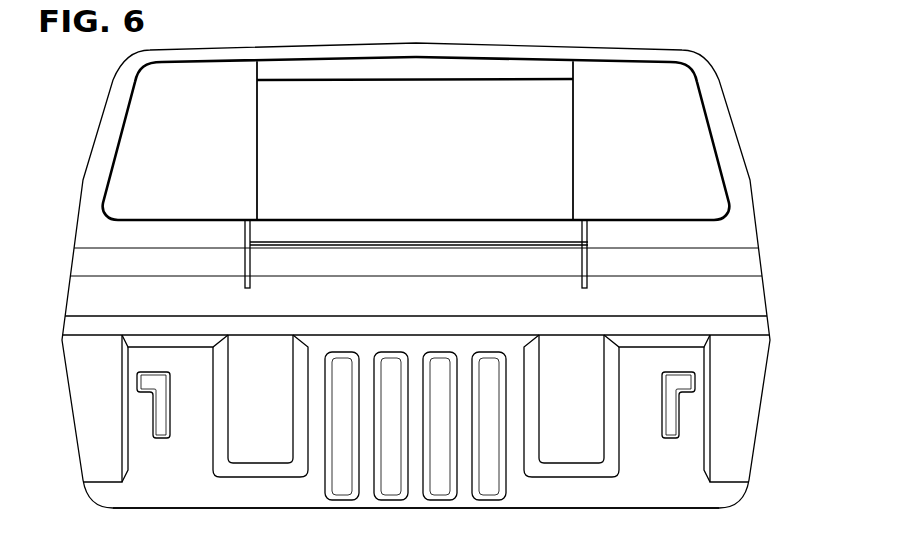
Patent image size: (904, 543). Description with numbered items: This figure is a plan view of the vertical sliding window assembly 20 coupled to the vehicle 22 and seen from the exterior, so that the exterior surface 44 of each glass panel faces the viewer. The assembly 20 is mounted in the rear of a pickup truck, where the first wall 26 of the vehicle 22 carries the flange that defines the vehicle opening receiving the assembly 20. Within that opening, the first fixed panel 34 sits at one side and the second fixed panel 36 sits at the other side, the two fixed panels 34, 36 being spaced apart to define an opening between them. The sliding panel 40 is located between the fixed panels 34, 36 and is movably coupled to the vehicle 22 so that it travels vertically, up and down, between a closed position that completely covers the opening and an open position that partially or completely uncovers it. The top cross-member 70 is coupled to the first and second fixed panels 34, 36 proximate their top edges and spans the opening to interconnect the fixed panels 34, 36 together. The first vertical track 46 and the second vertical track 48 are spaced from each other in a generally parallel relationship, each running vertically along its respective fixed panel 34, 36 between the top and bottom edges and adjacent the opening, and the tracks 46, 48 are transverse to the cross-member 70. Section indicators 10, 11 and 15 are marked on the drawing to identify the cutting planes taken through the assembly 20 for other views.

The section line 10- 10 is at (378, 90).
The section line 11- 11 is at (378, 280).
The section line 15- 15 is at (65, 188).
The vertical sliding window assembly 20 is at (706, 74).
The vehicle 22 is at (776, 320).
The first wall 26 is at (742, 295).
The first fixed panel 34 is at (133, 142).
The second fixed panel 36 is at (702, 152).
The sliding panel 40 is at (513, 108).
The exterior surface 44 is at (219, 130).
The first vertical track 46 is at (252, 258).
The second vertical track 48 is at (580, 258).
The top cross-member 70 is at (432, 63).